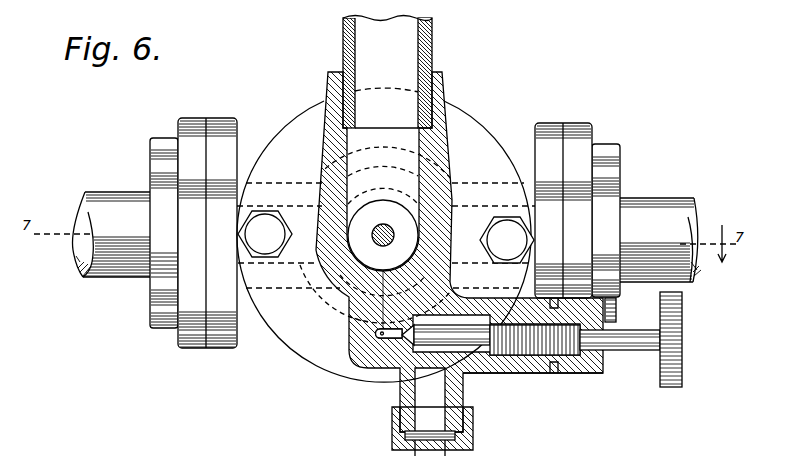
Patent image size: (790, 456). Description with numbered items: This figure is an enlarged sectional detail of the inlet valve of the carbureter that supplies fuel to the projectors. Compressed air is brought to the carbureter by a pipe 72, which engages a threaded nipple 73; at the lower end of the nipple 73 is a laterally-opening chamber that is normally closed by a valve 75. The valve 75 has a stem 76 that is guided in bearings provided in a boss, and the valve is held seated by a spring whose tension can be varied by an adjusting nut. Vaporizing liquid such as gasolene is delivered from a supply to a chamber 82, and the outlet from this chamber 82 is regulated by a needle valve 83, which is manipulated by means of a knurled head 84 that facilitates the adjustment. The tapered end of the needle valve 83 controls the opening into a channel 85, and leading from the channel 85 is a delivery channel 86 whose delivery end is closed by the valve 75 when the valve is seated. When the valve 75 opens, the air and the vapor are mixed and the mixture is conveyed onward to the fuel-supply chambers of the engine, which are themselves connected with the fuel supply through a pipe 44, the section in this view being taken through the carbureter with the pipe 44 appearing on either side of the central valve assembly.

The pipe 44 is at (118, 201).
The pipe 72 is at (410, 57).
The threaded nipple 73 is at (433, 140).
The valve 75 is at (365, 252).
The stem 76 is at (386, 229).
The chamber 82 is at (468, 350).
The needle valve 83 is at (443, 330).
The knurled head 84 is at (683, 328).
The channel 85 is at (396, 337).
The delivery channel 86 is at (381, 325).